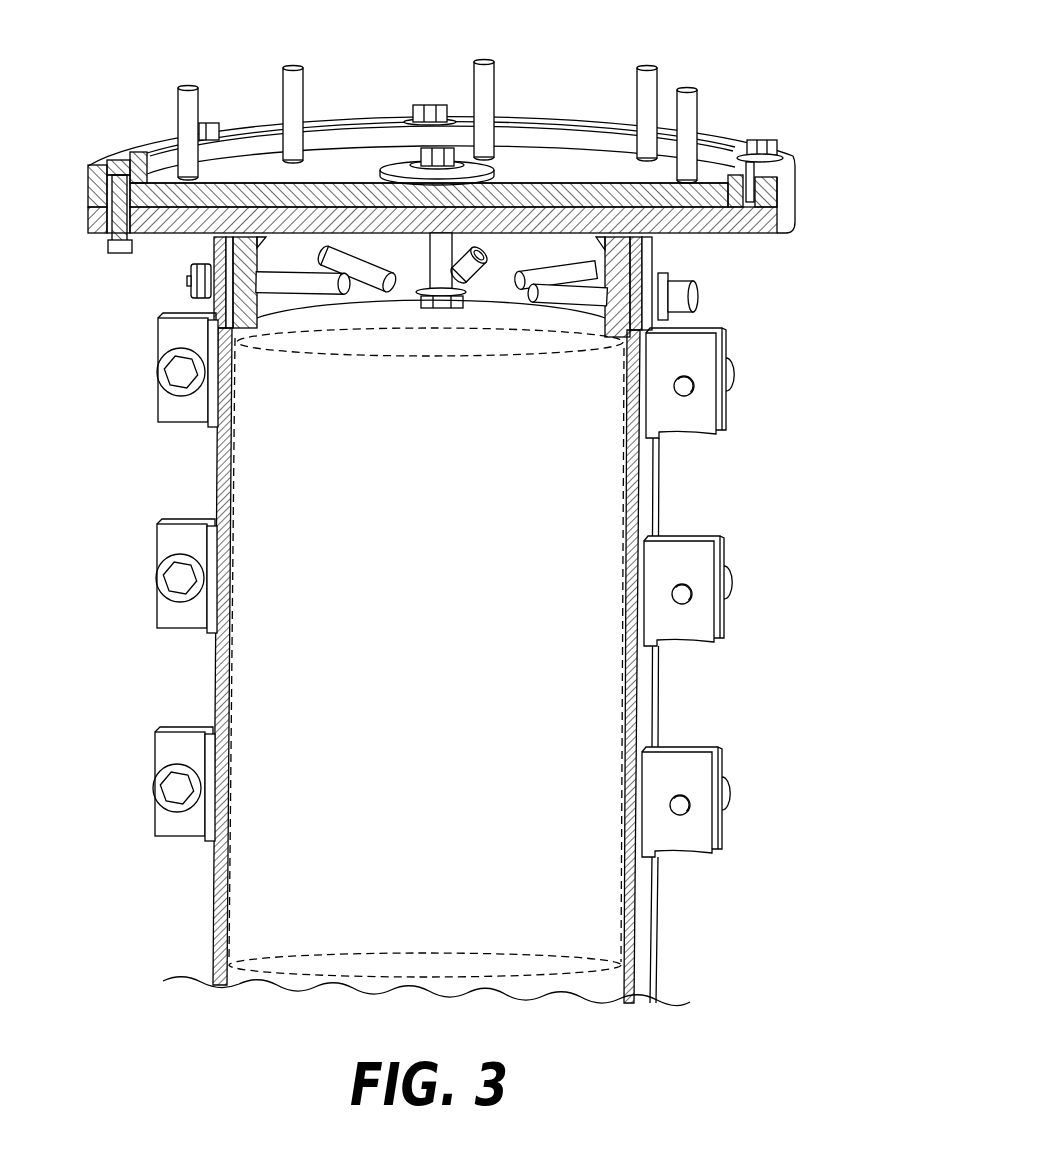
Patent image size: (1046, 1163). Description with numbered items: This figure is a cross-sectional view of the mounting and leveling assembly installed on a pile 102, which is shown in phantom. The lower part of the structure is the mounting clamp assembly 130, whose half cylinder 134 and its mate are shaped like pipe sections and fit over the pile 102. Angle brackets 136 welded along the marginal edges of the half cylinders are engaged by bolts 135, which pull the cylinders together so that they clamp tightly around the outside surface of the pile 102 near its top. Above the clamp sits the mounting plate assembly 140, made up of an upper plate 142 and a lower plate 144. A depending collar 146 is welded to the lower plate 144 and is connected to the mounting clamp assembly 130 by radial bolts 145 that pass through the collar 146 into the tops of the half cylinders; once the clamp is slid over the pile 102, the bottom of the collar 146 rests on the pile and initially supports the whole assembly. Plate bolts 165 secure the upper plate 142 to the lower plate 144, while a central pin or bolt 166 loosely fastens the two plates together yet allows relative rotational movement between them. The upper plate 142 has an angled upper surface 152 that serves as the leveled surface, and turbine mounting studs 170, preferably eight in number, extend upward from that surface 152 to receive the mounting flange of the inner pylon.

The pile 102 is at (293, 348).
The mounting clamp assembly 130 is at (737, 461).
The half cylinder 134 is at (515, 624).
The bolt 135 is at (172, 578).
The angle bracket 136 is at (163, 619).
The mounting plate assembly 140 is at (824, 190).
The upper plate 142 is at (93, 182).
The lower plate 144 is at (92, 223).
The bolt 145 is at (697, 299).
The collar 146 is at (213, 297).
The upper surface 152 is at (272, 160).
The bolt 165 is at (772, 141).
The central pin or bolt 166 is at (433, 157).
The mounting stud 170 is at (650, 75).